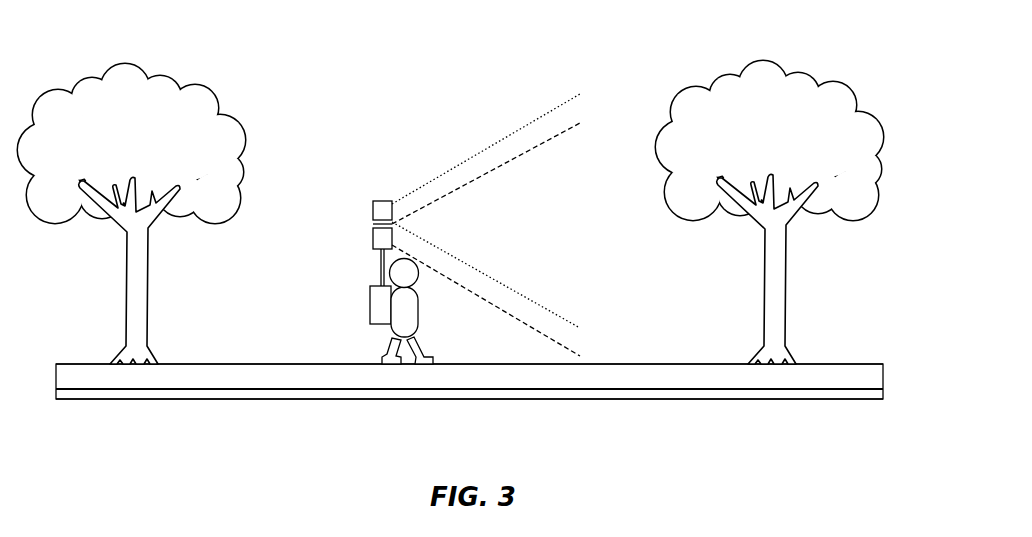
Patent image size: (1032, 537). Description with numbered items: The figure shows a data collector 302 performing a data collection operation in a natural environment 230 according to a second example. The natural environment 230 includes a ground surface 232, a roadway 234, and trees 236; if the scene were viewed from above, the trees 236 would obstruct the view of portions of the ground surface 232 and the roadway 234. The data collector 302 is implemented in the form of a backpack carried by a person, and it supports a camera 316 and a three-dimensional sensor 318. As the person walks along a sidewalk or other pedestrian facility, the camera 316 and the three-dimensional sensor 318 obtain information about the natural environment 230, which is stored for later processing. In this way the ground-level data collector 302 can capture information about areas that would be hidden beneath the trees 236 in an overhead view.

The natural environment 230 is at (746, 408).
The ground surface 232 is at (830, 363).
The roadway 234 is at (867, 388).
The trees 236 is at (864, 118).
The data collector 302 is at (356, 309).
The camera 316 is at (373, 216).
The three-dimensional sensor 318 is at (373, 242).